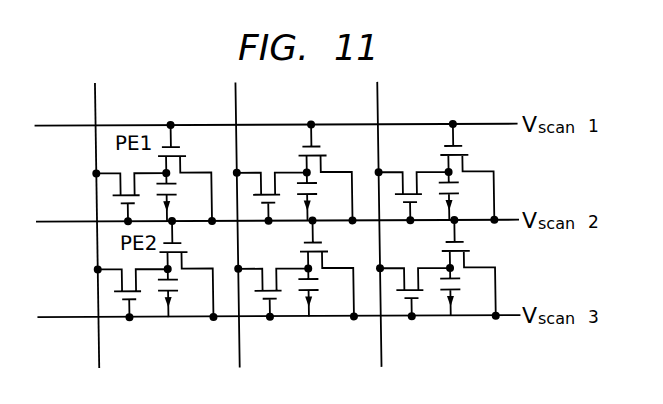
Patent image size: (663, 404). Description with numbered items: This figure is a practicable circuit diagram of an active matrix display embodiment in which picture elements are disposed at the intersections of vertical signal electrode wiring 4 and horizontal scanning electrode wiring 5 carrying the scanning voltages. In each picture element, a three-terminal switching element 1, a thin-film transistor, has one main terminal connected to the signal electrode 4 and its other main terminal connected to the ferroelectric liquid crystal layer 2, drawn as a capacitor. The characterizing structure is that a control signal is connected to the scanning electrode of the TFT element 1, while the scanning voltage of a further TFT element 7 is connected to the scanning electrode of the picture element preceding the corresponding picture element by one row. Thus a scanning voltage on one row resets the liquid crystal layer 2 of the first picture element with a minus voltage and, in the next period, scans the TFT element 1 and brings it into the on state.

The three-terminal switching element 1 is at (114, 203).
The ferroelectric liquid crystal layer 2 is at (148, 182).
The signal electrode wiring 4 is at (94, 101).
The scanning electrode wiring 5 is at (132, 125).
The TFT element 7 is at (180, 146).